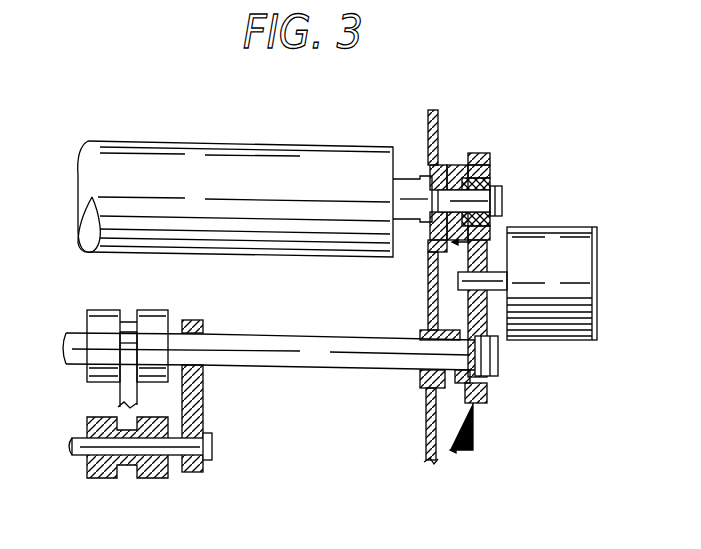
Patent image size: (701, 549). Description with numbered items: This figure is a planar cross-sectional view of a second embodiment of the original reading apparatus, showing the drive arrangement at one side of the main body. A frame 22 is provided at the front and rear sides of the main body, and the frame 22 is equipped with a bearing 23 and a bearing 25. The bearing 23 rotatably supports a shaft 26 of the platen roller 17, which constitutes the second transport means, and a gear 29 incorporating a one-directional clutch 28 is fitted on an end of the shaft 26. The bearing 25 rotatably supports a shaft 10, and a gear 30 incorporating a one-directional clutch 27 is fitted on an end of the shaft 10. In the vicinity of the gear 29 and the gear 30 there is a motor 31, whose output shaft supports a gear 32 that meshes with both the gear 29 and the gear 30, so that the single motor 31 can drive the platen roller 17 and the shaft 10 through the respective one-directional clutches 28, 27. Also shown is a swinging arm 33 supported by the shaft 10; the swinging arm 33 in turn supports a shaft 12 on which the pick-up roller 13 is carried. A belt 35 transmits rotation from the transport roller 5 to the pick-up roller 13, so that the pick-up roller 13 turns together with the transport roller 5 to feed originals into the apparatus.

The transport roller 5 is at (98, 320).
The shaft 10 is at (296, 345).
The shaft 12 is at (74, 452).
The pick-up roller 13 is at (108, 478).
The platen roller 17 is at (289, 158).
The frame 22 is at (433, 110).
The bearing 23 is at (445, 168).
The bearing 25 is at (426, 378).
The shaft 26 is at (404, 165).
The one-directional clutch 27 is at (492, 386).
The one-directional clutch 28 is at (494, 220).
The gear 29 is at (492, 170).
The gear 30 is at (482, 410).
The motor 31 is at (590, 252).
The gear 32 is at (496, 298).
The swinging arm 33 is at (190, 478).
The belt 35 is at (118, 392).